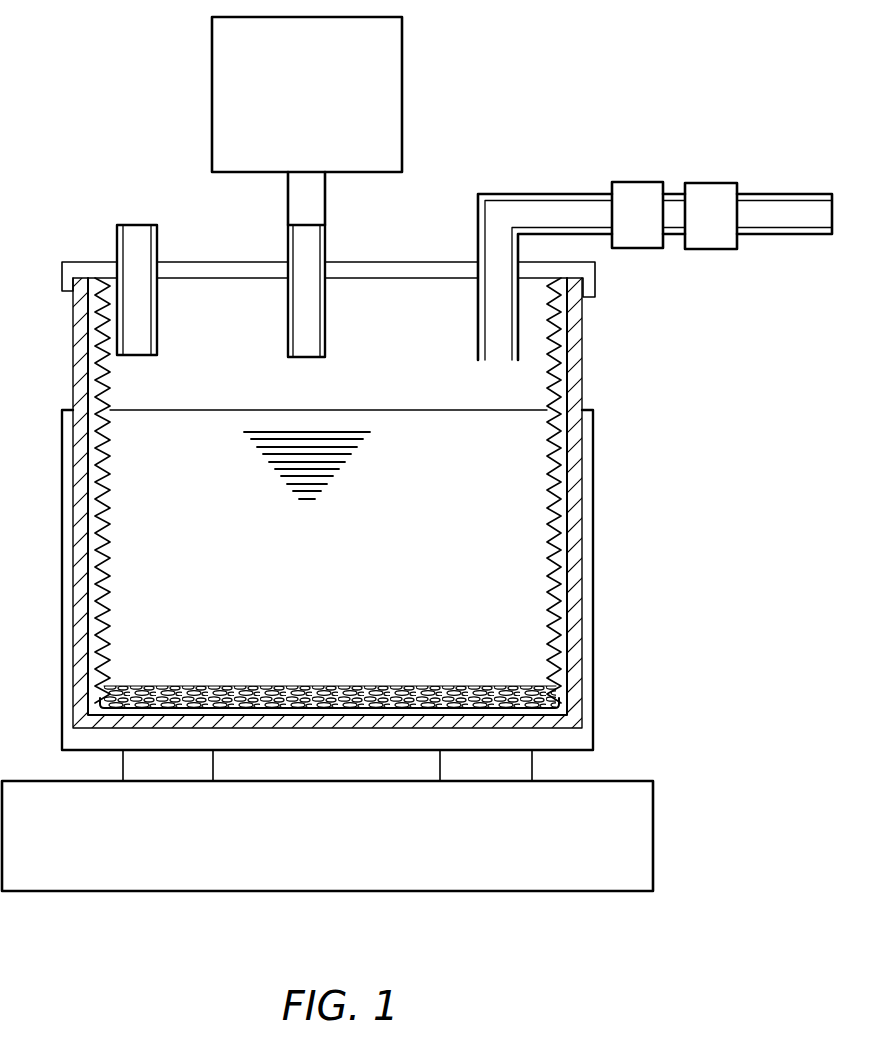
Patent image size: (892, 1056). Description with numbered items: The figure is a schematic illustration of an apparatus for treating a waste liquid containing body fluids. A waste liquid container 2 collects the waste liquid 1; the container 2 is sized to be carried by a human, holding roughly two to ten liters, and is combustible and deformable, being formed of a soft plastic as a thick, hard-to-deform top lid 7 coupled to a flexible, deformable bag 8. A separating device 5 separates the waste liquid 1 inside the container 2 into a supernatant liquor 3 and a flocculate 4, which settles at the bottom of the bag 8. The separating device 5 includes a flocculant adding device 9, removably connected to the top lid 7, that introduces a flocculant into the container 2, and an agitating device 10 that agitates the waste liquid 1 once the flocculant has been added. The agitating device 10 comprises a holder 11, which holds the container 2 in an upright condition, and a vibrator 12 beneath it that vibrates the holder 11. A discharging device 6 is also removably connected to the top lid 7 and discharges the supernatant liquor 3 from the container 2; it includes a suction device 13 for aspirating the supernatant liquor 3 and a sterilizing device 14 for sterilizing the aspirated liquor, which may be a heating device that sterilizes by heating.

The waste liquid 1 is at (467, 549).
The waste liquid container 2 is at (93, 256).
The supernatant liquor 3 is at (117, 555).
The flocculate 4 is at (156, 690).
The separating device 5 is at (183, 190).
The discharging device 6 is at (683, 115).
The top lid 7 is at (240, 264).
The bag 8 is at (98, 365).
The flocculant adding device 9 is at (400, 88).
The agitating device 10 is at (625, 757).
The holder 11 is at (595, 565).
The vibrator 12 is at (654, 840).
The suction device 13 is at (715, 183).
The sterilizing device 14 is at (637, 182).